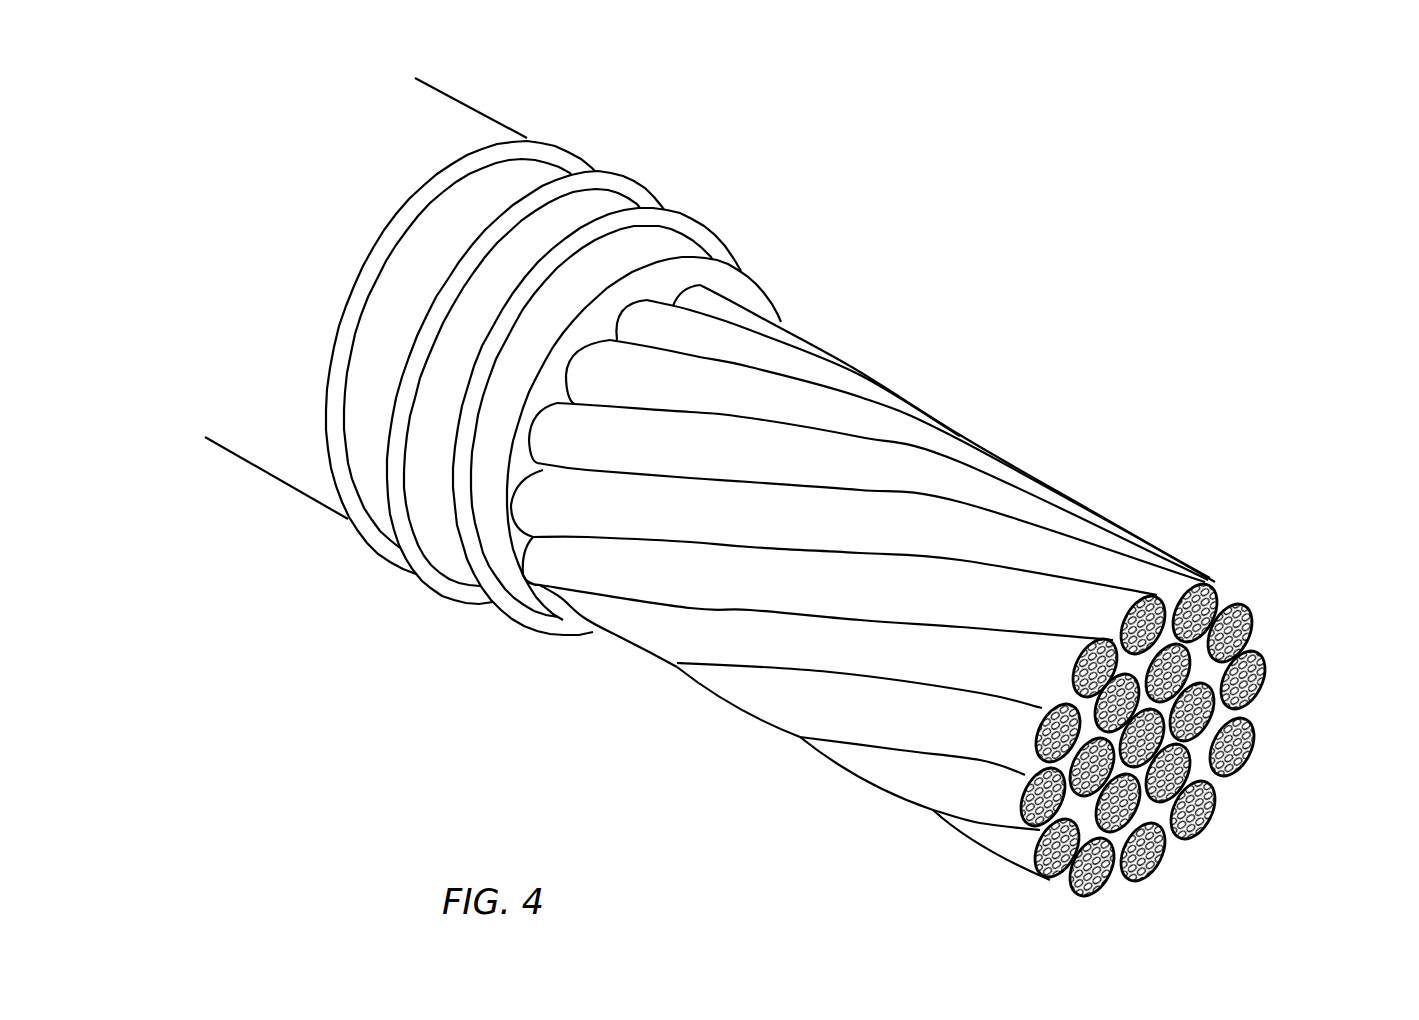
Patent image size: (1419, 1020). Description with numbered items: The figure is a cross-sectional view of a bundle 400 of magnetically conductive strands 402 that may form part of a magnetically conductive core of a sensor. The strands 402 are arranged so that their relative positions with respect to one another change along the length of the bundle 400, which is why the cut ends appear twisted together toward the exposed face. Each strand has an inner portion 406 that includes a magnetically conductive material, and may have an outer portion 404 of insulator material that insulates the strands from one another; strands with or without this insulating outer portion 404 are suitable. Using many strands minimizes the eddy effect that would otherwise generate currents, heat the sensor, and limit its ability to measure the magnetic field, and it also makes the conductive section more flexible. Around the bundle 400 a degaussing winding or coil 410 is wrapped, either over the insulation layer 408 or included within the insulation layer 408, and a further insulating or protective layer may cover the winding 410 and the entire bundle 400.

The bundle 400 is at (783, 489).
The magnetically conductive strands 402 is at (1265, 622).
The outer portion 404 is at (1045, 510).
The inner portion 406 is at (1265, 688).
The insulation layer 408 is at (746, 290).
The degaussing winding or coil 410 is at (572, 156).